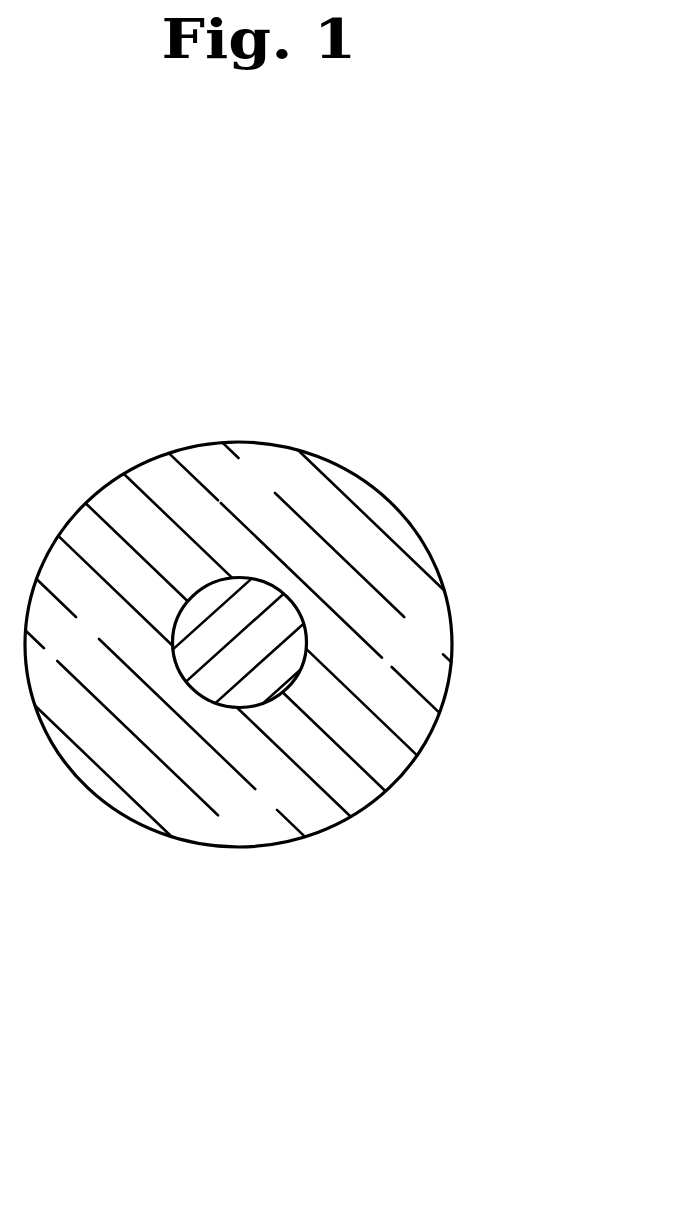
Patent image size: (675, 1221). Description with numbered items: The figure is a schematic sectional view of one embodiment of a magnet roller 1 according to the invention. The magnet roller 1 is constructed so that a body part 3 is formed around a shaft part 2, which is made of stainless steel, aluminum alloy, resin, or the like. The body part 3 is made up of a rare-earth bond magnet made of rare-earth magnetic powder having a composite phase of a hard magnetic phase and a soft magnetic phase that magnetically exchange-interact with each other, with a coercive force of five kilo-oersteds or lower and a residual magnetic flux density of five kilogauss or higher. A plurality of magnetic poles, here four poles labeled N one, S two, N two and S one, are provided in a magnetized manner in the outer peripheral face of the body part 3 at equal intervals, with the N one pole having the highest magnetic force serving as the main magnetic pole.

The magnet roller 1 is at (310, 600).
The shaft part 2 is at (270, 670).
The body part 3 is at (442, 586).